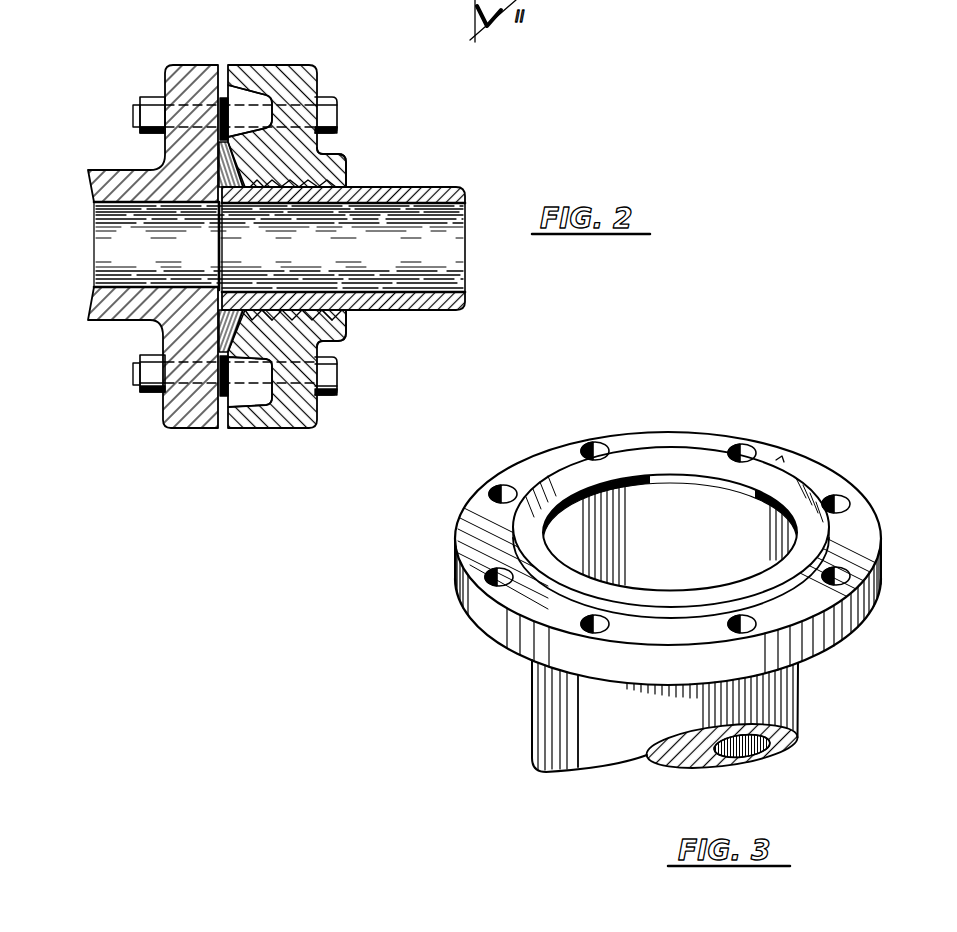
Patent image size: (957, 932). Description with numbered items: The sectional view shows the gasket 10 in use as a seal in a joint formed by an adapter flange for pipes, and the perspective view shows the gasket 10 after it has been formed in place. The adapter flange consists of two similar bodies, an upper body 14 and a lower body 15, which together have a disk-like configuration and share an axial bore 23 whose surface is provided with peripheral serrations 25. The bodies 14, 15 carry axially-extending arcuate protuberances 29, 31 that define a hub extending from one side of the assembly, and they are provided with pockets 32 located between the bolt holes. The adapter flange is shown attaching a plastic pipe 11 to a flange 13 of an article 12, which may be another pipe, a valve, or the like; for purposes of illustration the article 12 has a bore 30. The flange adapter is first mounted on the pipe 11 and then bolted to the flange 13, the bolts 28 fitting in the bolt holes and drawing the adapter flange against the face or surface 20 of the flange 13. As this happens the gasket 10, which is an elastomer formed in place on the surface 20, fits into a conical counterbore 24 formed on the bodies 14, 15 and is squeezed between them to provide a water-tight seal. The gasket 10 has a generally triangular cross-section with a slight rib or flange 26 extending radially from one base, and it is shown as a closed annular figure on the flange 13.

In FIG. 2, the gasket 10 is at (213, 328).
In FIG. 3, the gasket 10 is at (777, 459).
In FIG. 2, the plastic pipe 11 is at (430, 187).
In FIG. 3, the article 12 is at (572, 715).
In FIG. 2, the flange 13 is at (178, 65).
In FIG. 3, the flange 13 is at (512, 628).
In FIG. 2, the upper body 14 is at (318, 68).
In FIG. 2, the lower body 15 is at (316, 418).
In FIG. 2, the face or surface 20 is at (223, 65).
In FIG. 3, the face or surface 20 is at (482, 526).
In FIG. 2, the axial bore 23 is at (336, 302).
In FIG. 2, the conical counterbore 24 is at (268, 305).
In FIG. 2, the peripheral serrations 25 is at (313, 305).
In FIG. 2, the rib or flange 26 is at (217, 364).
In FIG. 2, the bolts 28 is at (333, 104).
In FIG. 2, the arcuate protuberance 29 is at (347, 172).
In FIG. 2, the bore 30 is at (102, 256).
In FIG. 3, the bore 30 is at (702, 574).
In FIG. 2, the arcuate protuberance 31 is at (347, 320).
In FIG. 2, the pockets 32 is at (250, 95).